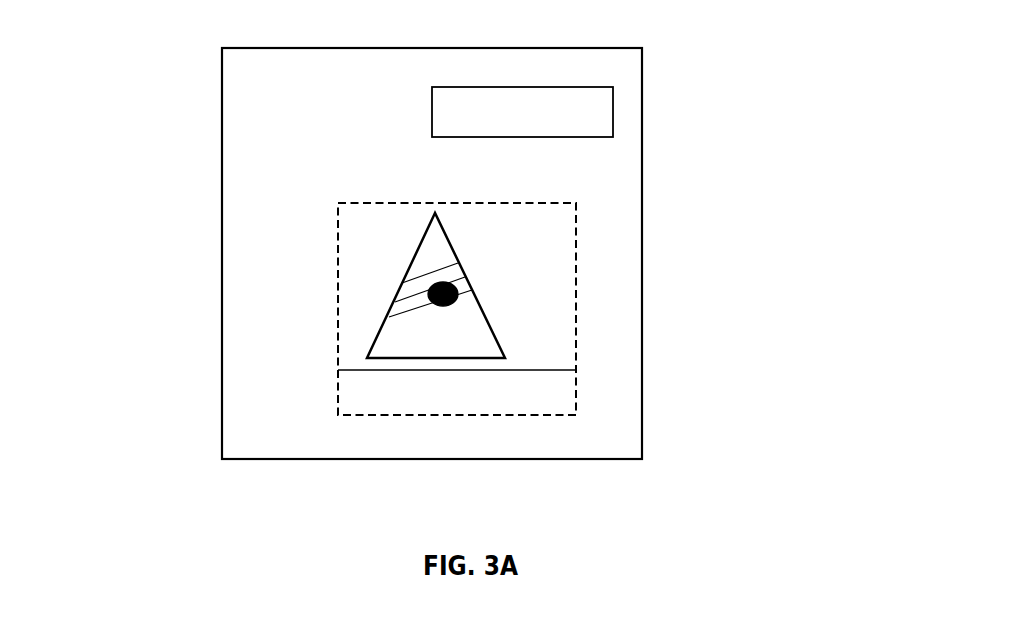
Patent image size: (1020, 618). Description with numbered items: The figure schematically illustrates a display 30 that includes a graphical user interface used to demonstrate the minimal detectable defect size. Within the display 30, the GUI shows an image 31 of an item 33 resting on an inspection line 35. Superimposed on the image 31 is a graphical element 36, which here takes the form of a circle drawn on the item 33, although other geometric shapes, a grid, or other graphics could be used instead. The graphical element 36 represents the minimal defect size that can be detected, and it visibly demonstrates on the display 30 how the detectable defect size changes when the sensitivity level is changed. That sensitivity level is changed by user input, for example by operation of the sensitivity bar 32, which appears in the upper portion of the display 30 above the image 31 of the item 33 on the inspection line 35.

The display 30 is at (182, 180).
The image 31 is at (336, 272).
The sensitivity bar 32 is at (590, 107).
The item 33 is at (427, 338).
The inspection line 35 is at (393, 380).
The graphical element 36 is at (458, 302).